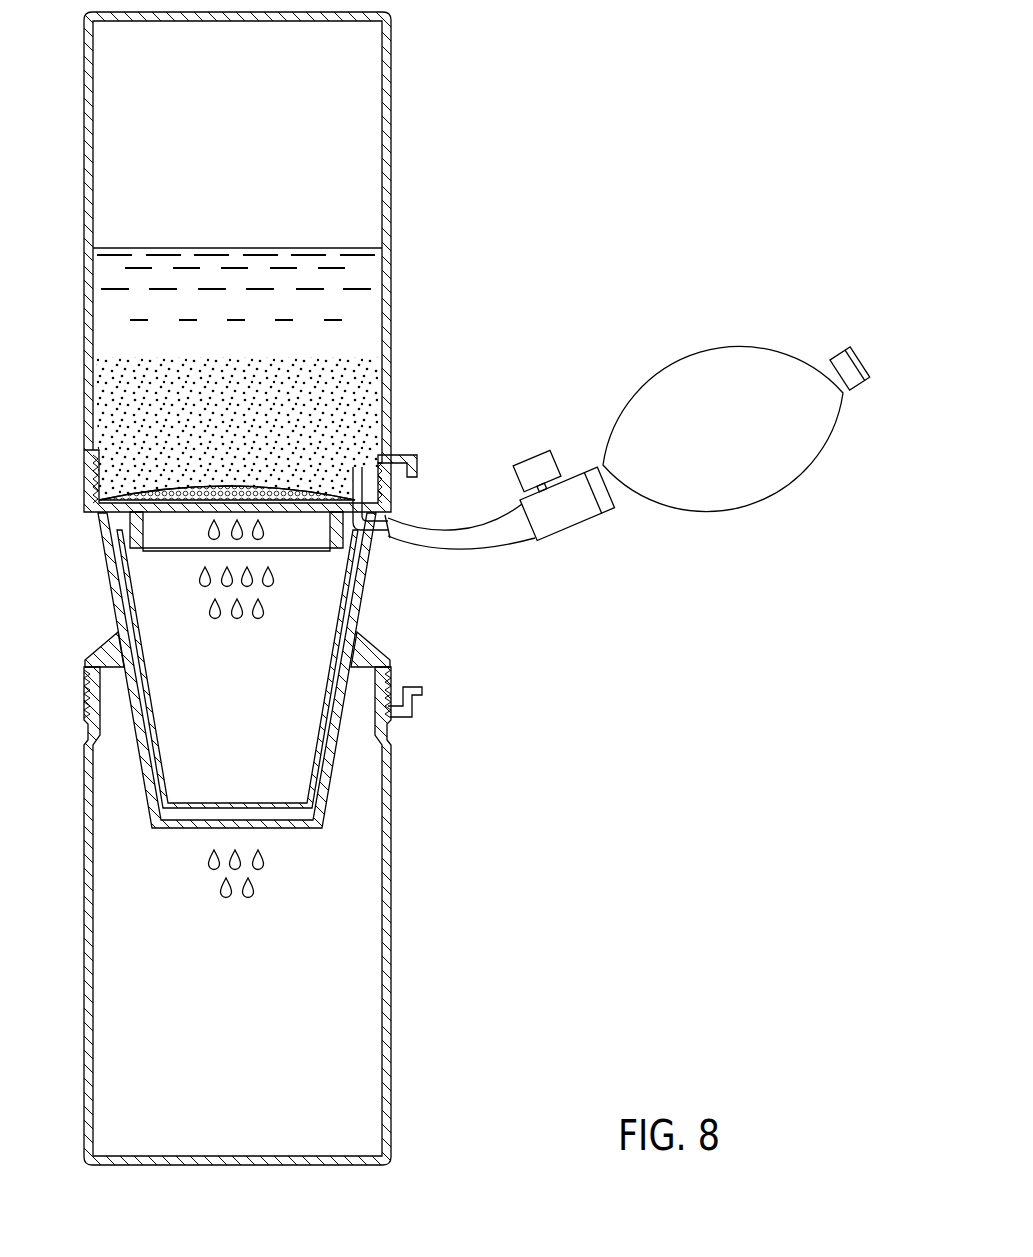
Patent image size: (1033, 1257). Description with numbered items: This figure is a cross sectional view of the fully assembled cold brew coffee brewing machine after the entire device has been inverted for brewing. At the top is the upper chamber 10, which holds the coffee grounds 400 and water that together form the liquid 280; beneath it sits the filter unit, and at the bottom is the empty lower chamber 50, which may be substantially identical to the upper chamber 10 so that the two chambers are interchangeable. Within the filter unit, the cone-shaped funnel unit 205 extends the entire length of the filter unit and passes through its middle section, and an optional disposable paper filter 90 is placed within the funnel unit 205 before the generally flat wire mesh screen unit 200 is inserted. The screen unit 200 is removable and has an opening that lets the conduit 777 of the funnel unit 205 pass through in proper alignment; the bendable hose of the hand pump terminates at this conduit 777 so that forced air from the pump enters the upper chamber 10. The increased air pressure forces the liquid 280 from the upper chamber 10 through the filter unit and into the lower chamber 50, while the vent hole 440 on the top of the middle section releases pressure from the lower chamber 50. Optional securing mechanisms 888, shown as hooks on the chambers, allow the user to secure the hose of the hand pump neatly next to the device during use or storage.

The upper chamber 10 is at (391, 953).
The lower chamber 50 is at (392, 330).
The disposable paper filter 90 is at (340, 603).
The screen unit 200 is at (176, 506).
The funnel unit 205 is at (365, 573).
The liquid 280 is at (308, 248).
The coffee grounds 400 is at (140, 411).
The vent hole 440 is at (110, 650).
The conduit 777 is at (391, 490).
The securing mechanism 888 is at (417, 459).